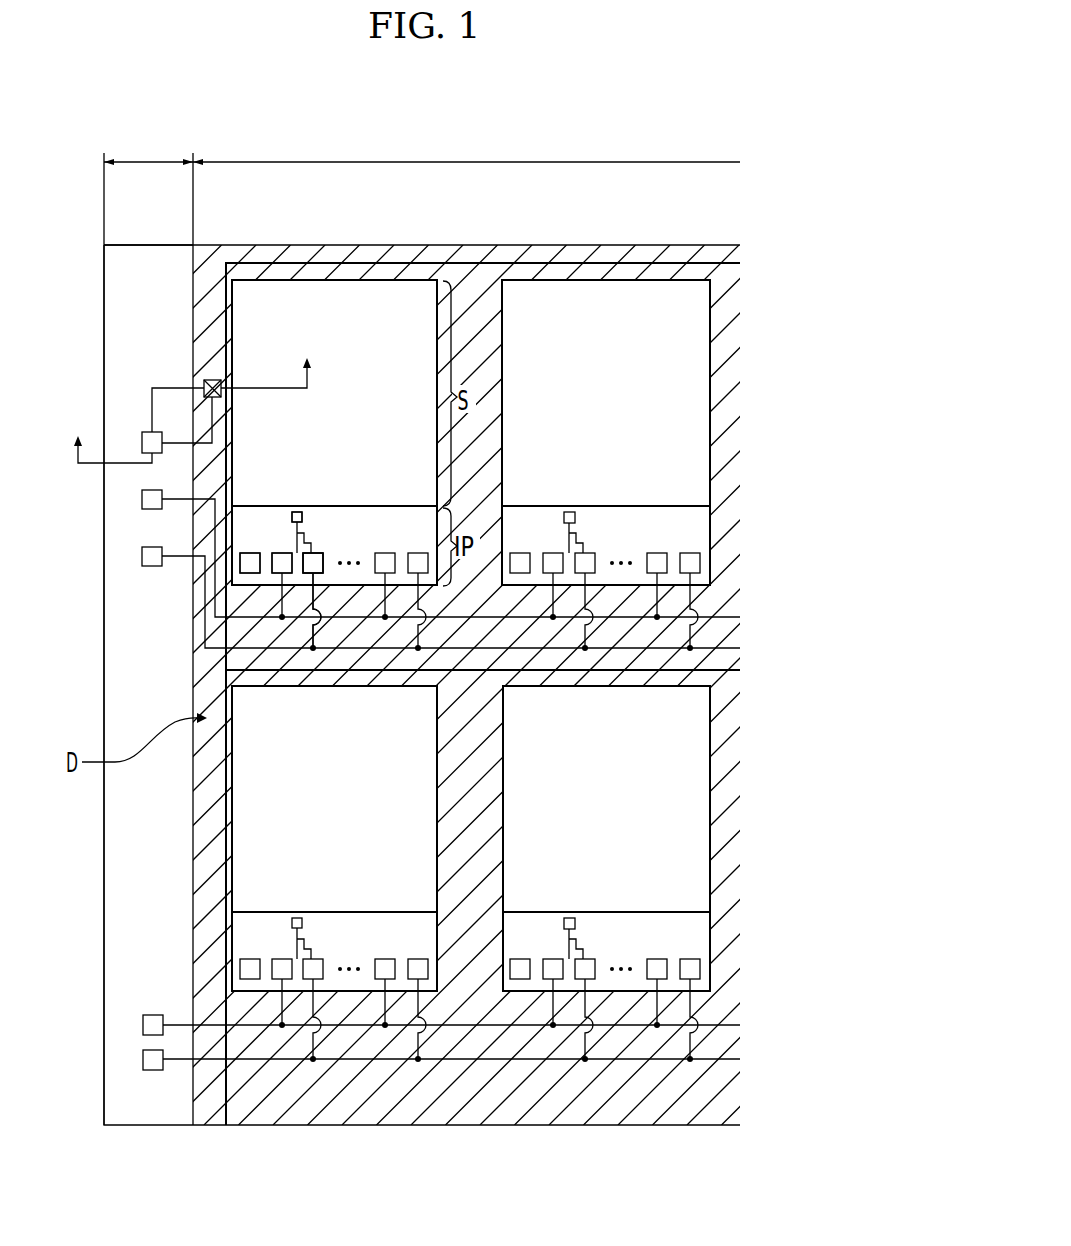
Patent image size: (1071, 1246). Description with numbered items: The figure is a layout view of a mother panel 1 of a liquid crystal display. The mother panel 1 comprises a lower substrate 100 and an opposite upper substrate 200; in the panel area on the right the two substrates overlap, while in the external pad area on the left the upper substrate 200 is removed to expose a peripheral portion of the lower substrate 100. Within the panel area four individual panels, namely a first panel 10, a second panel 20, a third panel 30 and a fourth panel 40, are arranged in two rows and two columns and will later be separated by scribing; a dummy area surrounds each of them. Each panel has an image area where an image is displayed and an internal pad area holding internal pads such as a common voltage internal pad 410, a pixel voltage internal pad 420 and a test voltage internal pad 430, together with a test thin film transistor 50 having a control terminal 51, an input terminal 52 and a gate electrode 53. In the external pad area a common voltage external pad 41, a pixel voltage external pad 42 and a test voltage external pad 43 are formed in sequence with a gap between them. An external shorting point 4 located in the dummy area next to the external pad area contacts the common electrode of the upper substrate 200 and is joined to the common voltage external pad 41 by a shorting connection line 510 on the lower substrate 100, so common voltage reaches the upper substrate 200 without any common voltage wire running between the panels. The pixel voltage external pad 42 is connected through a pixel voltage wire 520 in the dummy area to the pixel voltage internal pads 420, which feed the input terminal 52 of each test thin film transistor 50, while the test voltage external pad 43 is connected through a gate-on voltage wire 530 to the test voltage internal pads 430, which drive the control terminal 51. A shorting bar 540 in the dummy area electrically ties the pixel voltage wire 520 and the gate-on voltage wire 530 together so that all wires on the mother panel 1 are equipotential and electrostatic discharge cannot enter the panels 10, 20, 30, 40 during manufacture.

The mother panel 1 is at (302, 98).
The lower substrate 100 is at (148, 243).
The upper substrate 200 is at (261, 262).
The first panel 10 is at (347, 279).
The second panel 20 is at (231, 837).
The third panel 30 is at (598, 279).
The fourth panel 40 is at (712, 807).
The external shorting point 4 is at (212, 379).
The common voltage external pad 41 is at (145, 432).
The pixel voltage external pad 42 is at (142, 499).
The test voltage external pad 43 is at (142, 556).
The test thin film transistor 50 is at (308, 538).
The control terminal 51 is at (314, 553).
The input terminal 52 is at (300, 614).
The gate electrode 53 is at (295, 527).
The common voltage internal pad 410 is at (244, 553).
The pixel voltage internal pad 420 is at (278, 586).
The test voltage internal pad 430 is at (322, 553).
The shorting connection line 510 is at (178, 432).
The pixel voltage wire 520 is at (345, 618).
The gate-on voltage wire 530 is at (365, 650).
The shorting bar 540 is at (250, 667).